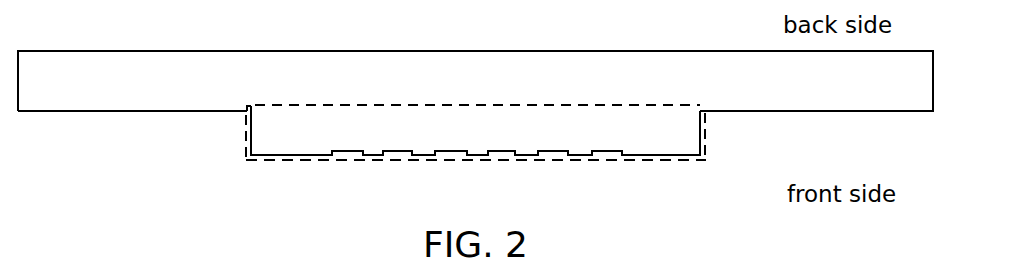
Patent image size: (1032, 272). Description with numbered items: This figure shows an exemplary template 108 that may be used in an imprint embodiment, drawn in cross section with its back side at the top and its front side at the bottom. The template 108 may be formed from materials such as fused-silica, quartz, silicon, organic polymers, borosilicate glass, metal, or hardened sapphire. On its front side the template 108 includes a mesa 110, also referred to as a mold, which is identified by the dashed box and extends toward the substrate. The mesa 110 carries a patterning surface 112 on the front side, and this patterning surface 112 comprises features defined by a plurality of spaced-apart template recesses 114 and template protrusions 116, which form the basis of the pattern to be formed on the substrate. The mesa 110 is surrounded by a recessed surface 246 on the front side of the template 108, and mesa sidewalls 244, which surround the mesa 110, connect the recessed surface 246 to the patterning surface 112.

The template 108 is at (86, 33).
The mesa 110 is at (653, 127).
The patterning surface 112 is at (707, 155).
The template recesses 114 is at (398, 145).
The template protrusions 116 is at (530, 158).
The mesa sidewalls 244 is at (247, 136).
The recessed surface 246 is at (133, 111).